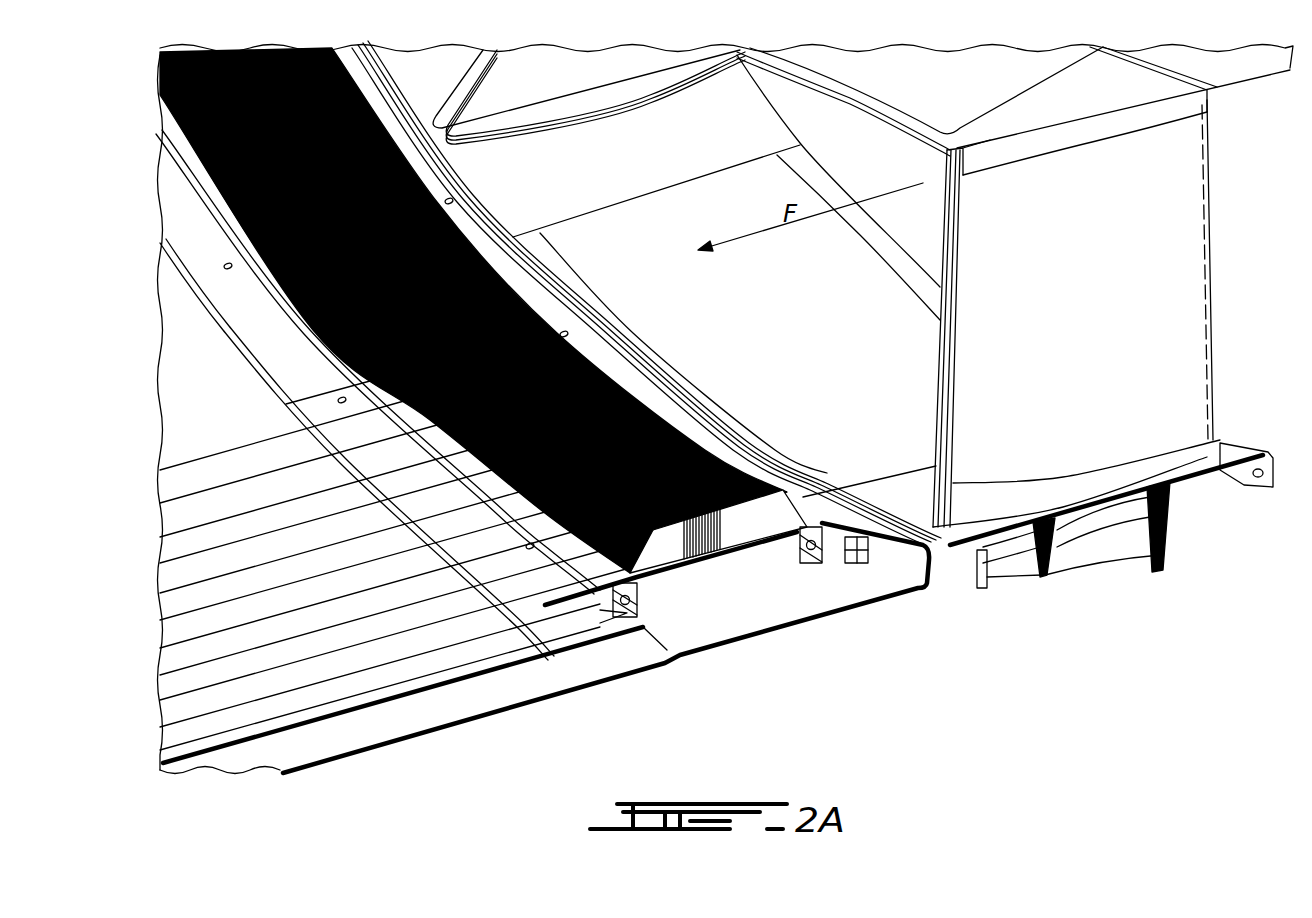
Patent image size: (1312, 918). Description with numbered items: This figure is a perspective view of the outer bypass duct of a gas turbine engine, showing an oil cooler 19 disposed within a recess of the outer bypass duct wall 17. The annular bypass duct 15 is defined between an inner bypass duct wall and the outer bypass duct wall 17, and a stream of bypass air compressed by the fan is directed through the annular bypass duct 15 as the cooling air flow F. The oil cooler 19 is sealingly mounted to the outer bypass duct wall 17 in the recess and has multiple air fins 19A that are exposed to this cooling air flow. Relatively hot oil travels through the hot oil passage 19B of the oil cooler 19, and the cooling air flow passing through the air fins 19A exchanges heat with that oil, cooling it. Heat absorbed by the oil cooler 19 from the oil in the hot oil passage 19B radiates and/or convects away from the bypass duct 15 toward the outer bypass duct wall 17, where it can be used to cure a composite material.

The annular bypass duct 15 is at (600, 252).
The outer bypass duct wall 17 is at (218, 677).
The oil cooler 19 is at (796, 486).
The air fins 19A is at (578, 508).
The hot oil passage 19B is at (743, 560).